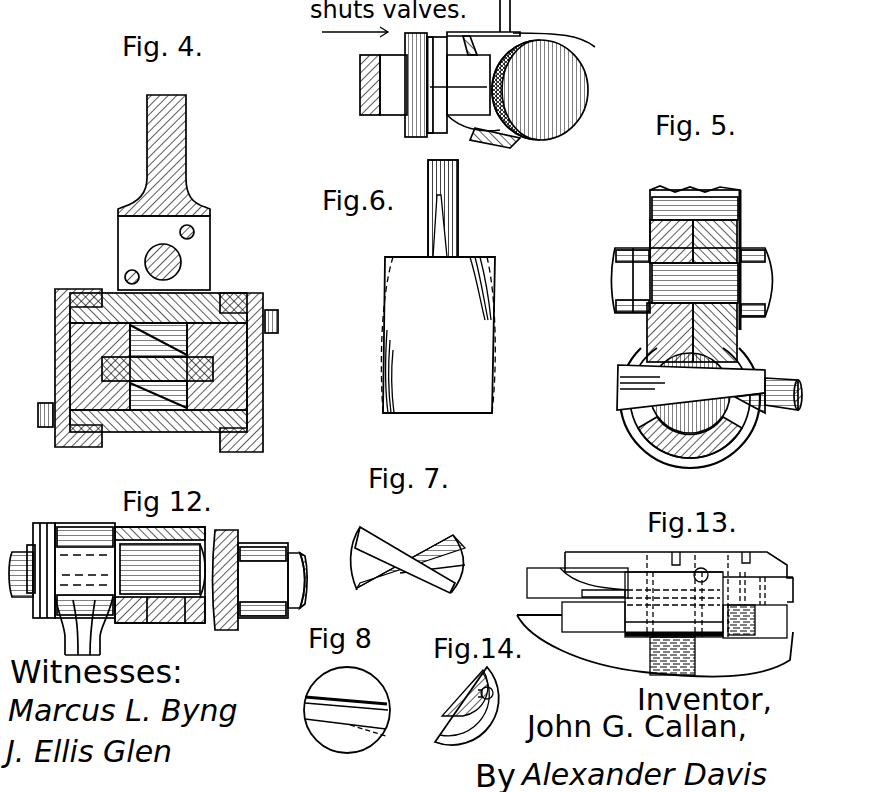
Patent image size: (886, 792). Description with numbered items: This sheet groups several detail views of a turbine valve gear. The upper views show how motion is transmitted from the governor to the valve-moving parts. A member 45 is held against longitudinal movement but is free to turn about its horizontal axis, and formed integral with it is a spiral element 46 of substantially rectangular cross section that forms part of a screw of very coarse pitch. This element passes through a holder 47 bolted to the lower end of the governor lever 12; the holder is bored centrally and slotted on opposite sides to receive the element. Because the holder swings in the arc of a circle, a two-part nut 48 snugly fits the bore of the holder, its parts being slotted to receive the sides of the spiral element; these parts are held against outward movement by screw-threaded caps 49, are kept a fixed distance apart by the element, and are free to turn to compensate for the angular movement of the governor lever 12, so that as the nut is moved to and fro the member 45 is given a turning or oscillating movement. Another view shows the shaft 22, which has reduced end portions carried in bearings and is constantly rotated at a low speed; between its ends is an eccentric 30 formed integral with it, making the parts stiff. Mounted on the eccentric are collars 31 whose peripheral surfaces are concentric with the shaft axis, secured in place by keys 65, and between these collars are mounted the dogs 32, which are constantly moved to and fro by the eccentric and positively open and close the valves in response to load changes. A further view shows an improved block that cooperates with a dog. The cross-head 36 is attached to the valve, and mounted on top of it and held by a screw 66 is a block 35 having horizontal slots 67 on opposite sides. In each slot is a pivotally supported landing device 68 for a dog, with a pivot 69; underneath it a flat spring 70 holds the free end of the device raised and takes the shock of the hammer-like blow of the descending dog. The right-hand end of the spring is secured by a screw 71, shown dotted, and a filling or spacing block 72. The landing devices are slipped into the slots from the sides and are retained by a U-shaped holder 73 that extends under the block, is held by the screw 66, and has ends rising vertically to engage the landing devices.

In FIG. 4, the governor lever 12 is at (147, 138).
In FIG. 5, the governor lever 12 is at (360, 80).
In FIG. 12, the shaft 22 is at (293, 558).
In FIG. 12, the eccentric 30 is at (143, 623).
In FIG. 12, the collars 31 is at (187, 623).
In FIG. 12, the dogs 32 is at (83, 527).
In FIG. 13, the block 35 is at (590, 552).
In FIG. 13, the cross-head 36 is at (655, 646).
In FIG. 5, the member 45 is at (517, 3).
In FIG. 6, the member 45 is at (458, 183).
In FIG. 4, the spiral element 46 is at (157, 377).
In FIG. 5, the spiral element 46 is at (681, 476).
In FIG. 6, the spiral element 46 is at (483, 300).
In FIG. 7, the spiral element 46 is at (458, 543).
In FIG. 4, the holder 47 is at (210, 278).
In FIG. 5, the holder 47 is at (647, 323).
In FIG. 4, the two-part nut 48 is at (70, 352).
In FIG. 5, the two-part nut 48 is at (657, 428).
In FIG. 8, the two-part nut 48 is at (347, 710).
In FIG. 4, the screw-threaded caps 49 is at (67, 280).
In FIG. 5, the screw-threaded caps 49 is at (589, 88).
In FIG. 14, the keys 65 is at (493, 693).
In FIG. 13, the screw 66 is at (695, 656).
In FIG. 13, the horizontal slots 67 is at (575, 580).
In FIG. 13, the landing device 68 is at (533, 585).
In FIG. 13, the pivot 69 is at (707, 571).
In FIG. 13, the flat spring 70 is at (620, 588).
In FIG. 13, the screw 71 is at (757, 568).
In FIG. 13, the filling or spacing block 72 is at (755, 623).
In FIG. 13, the U-shaped holder 73 is at (625, 619).